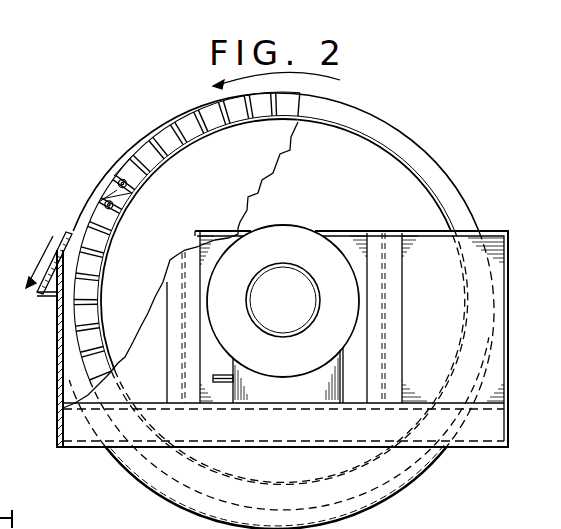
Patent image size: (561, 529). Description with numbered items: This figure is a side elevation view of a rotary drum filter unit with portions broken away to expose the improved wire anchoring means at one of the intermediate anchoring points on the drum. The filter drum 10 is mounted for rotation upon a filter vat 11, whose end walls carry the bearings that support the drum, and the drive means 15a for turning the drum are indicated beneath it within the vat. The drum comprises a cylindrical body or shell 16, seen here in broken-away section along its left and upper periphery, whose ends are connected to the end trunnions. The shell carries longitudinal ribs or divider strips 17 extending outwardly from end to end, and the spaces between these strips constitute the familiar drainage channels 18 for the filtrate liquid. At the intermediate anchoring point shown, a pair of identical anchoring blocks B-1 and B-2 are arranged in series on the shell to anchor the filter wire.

The filter drum 10 is at (430, 154).
The filter vat 11 is at (507, 256).
The drive means 15a is at (301, 365).
The cylindrical body or shell 16 is at (166, 164).
The longitudinal ribs or divider strips 17 is at (184, 154).
The drainage channels 18 is at (267, 103).
The anchoring block B-1 is at (104, 203).
The anchoring block B-2 is at (119, 182).